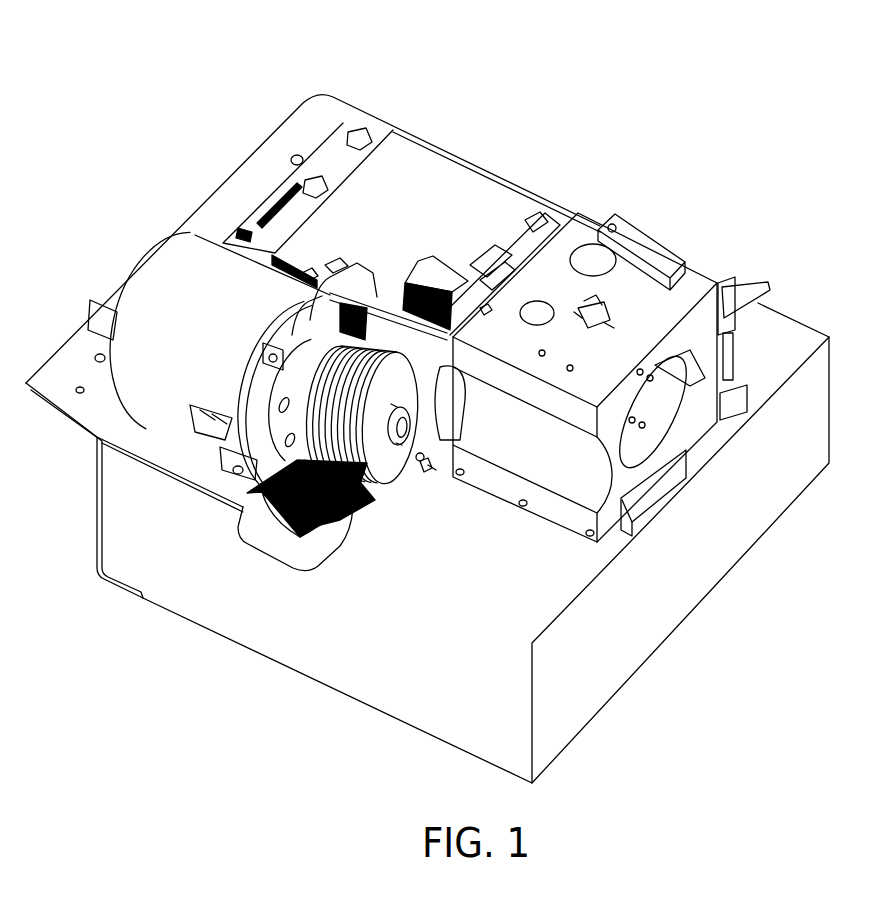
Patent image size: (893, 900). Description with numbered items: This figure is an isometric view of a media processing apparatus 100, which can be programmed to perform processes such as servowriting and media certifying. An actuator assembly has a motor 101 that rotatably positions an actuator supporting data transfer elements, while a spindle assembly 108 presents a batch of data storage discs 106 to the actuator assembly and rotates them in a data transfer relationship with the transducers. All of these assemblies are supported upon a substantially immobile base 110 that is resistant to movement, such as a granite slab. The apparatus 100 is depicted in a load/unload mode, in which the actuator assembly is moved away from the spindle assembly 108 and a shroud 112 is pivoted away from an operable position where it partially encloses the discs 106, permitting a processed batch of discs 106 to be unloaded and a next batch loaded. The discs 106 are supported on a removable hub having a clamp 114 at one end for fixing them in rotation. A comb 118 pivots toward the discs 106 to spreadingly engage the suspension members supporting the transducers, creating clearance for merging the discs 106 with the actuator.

The media processing apparatus 100 is at (522, 124).
The motor 101 is at (683, 297).
The data storage discs 106 is at (413, 400).
The spindle assembly 108 is at (307, 395).
The base 110 is at (783, 343).
The shroud 112 is at (320, 550).
The clamp 114 is at (428, 470).
The comb 118 is at (440, 282).